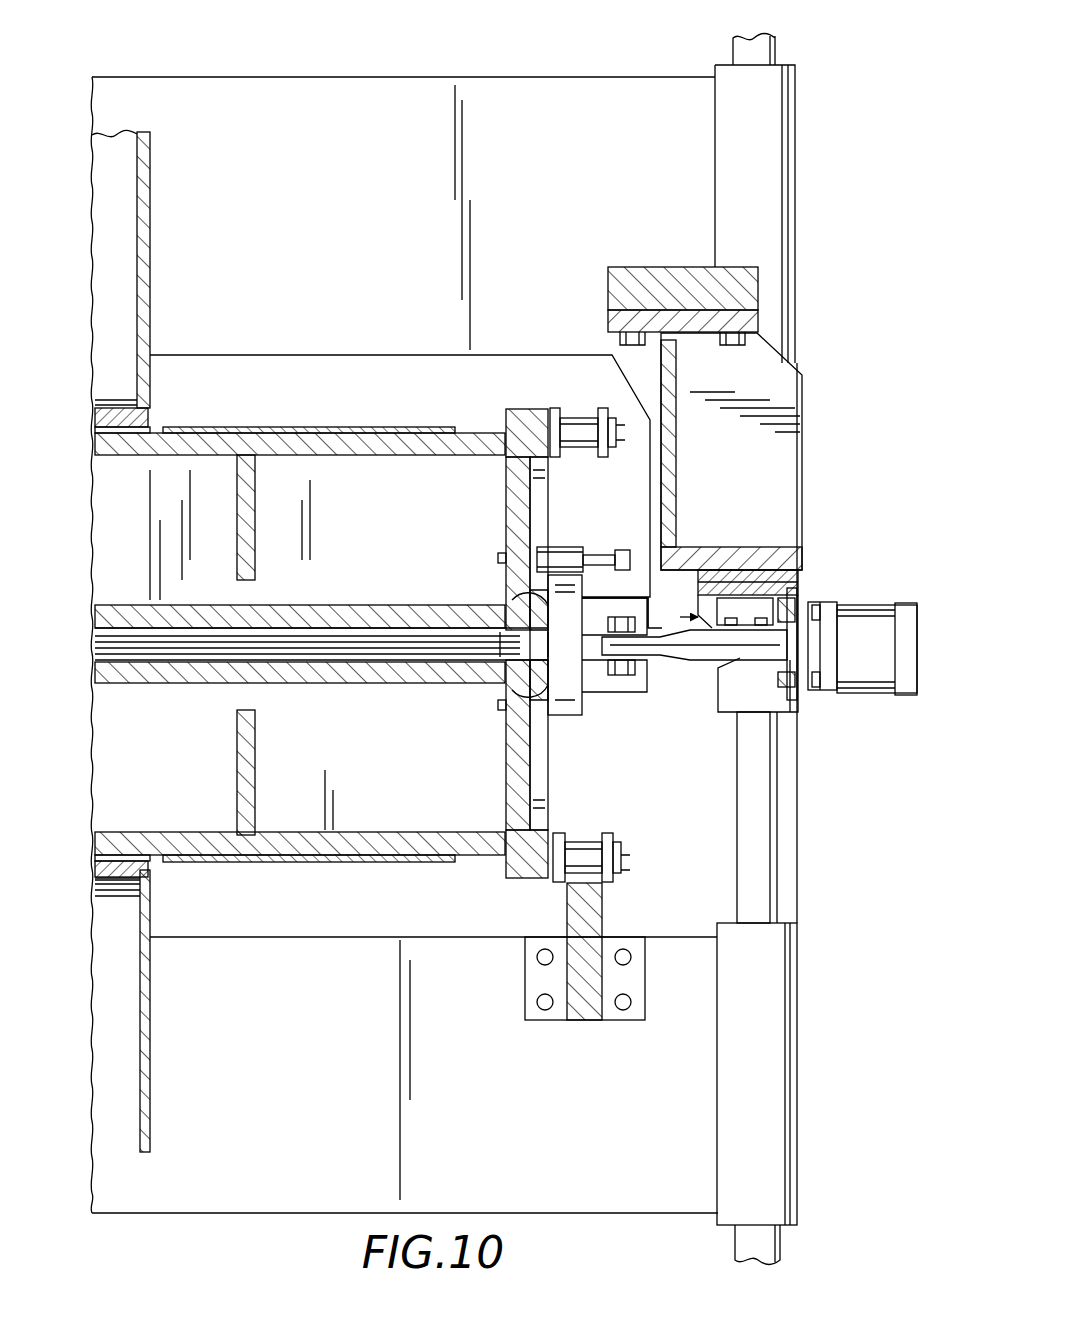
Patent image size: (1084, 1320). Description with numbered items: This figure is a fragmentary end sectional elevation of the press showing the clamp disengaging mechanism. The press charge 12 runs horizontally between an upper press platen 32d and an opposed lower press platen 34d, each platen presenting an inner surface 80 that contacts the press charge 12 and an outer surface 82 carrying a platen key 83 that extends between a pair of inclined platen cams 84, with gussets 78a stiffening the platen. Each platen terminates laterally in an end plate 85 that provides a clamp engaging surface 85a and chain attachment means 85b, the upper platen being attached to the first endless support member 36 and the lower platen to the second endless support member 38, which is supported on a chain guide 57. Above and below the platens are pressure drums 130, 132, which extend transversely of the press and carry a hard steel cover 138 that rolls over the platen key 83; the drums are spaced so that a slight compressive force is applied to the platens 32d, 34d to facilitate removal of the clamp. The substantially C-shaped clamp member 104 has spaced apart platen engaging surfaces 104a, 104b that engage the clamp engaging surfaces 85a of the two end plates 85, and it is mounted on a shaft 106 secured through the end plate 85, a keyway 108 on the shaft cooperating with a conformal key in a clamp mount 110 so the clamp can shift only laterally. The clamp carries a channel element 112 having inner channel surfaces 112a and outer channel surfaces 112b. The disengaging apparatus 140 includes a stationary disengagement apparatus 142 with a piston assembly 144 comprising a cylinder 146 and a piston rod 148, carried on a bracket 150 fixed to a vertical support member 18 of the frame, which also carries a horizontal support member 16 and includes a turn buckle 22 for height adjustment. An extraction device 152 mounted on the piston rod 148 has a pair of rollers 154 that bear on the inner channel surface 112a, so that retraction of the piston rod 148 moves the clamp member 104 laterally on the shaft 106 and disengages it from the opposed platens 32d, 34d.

The press charge 12 is at (308, 660).
The horizontal support member 16 is at (797, 243).
The vertical support member 18 is at (800, 900).
The turn buckle 22 is at (797, 700).
The upper press platen 32d is at (310, 544).
The lower press platen 34d is at (310, 771).
The first endless support member 36 is at (590, 410).
The second endless support member 38 is at (598, 848).
The chain guide 57 is at (604, 925).
The gusset 78a is at (237, 545).
The inner surface 80 is at (380, 630).
The outer surface 82 is at (482, 432).
The platen key 83 is at (130, 430).
The platen cam 84 is at (375, 428).
The end plate 85 is at (504, 498).
The clamp engaging surface 85a is at (503, 562).
The chain attachment means 85b is at (620, 428).
The clamp member 104 is at (542, 718).
The platen engaging surface 104a is at (528, 615).
The platen engaging surface 104b is at (578, 665).
The shaft 106 is at (598, 556).
The keyway 108 is at (540, 575).
The clamp mount 110 is at (570, 547).
The channel element 112 is at (655, 594).
The inner channel surface 112a is at (630, 670).
The outer channel surface 112b is at (655, 665).
The pressure drum 130 is at (155, 222).
The pressure drum 132 is at (157, 1025).
The hard steel cover 138 is at (118, 432).
The disengaging apparatus 140 is at (847, 666).
The stationary disengagement apparatus 142 is at (806, 585).
The piston assembly 144 is at (840, 692).
The cylinder 146 is at (840, 605).
The piston rod 148 is at (747, 648).
The bracket 150 is at (677, 492).
The extraction device 152 is at (690, 652).
The roller 154 is at (618, 667).